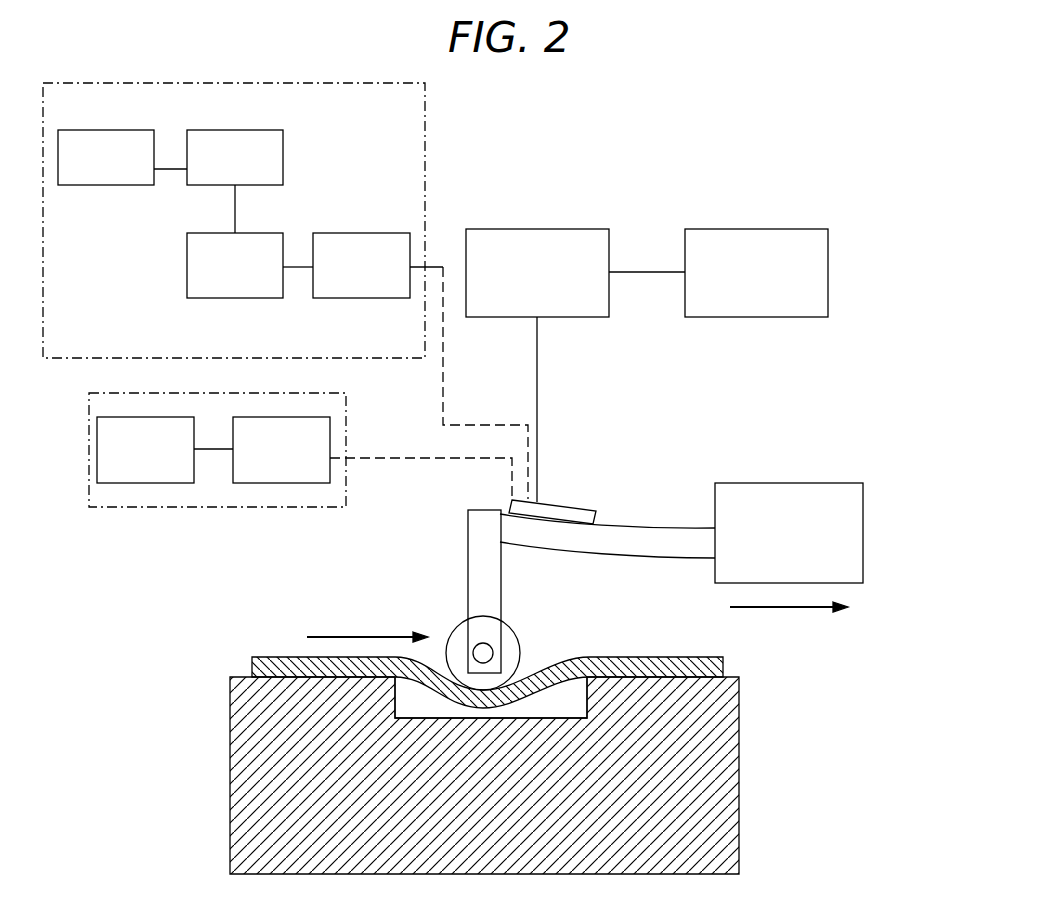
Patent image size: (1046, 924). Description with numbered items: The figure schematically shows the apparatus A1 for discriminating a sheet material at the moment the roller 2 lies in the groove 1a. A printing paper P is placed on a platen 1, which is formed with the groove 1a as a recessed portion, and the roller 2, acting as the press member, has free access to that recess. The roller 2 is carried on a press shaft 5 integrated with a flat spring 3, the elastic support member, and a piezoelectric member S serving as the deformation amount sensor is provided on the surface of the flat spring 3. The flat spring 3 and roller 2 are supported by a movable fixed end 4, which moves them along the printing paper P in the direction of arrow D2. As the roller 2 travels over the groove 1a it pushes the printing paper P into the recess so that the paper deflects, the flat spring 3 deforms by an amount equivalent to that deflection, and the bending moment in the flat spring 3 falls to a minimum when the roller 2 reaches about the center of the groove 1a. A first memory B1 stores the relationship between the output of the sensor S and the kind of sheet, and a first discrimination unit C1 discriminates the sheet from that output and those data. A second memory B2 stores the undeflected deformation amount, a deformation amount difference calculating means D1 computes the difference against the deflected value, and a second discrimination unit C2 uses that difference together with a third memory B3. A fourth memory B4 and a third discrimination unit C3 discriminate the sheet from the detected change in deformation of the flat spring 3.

The apparatus for discriminating a sheet material A1 is at (770, 133).
The first memory B1 is at (728, 228).
The first discrimination unit C1 is at (518, 228).
The second memory B2 is at (235, 265).
The third memory B3 is at (106, 157).
The fourth memory B4 is at (145, 450).
The second discrimination unit C2 is at (235, 157).
The third discrimination unit C3 is at (281, 450).
The deformation amount difference calculating means D1 is at (361, 265).
The direction of arrow D2 is at (353, 630).
The piezoelectric member S is at (583, 503).
The platen 1 is at (740, 808).
The groove 1a is at (572, 693).
The roller 2 is at (512, 638).
The flat spring 3 is at (660, 528).
The movable fixed end 4 is at (845, 483).
The press shaft 5 is at (470, 533).
The printing paper P is at (280, 657).